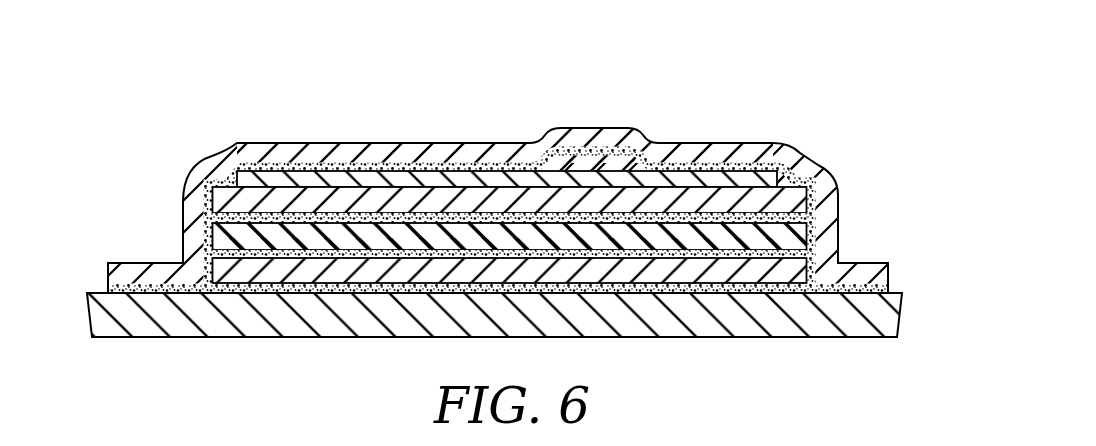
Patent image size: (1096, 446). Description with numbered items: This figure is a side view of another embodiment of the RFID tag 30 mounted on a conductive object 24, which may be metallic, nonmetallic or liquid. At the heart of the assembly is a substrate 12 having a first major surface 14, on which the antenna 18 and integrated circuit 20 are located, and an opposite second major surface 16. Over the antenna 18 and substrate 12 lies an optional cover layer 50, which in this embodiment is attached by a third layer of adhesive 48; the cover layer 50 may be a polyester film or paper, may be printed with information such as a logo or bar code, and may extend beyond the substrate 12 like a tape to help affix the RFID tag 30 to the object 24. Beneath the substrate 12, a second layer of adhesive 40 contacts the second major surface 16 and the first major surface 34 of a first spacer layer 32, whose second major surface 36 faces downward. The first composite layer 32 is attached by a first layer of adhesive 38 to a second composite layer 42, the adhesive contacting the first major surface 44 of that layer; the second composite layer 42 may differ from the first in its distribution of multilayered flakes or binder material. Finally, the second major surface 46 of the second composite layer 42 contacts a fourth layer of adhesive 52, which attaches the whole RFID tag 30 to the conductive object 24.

The substrate 12 is at (666, 198).
The first major surface 14 is at (782, 167).
The second major surface 16 is at (746, 216).
The antenna 18 is at (405, 180).
The integrated circuit 20 is at (597, 160).
The conductive object 24 is at (848, 338).
The RFID tag 30 is at (772, 92).
The first spacer layer 32 is at (788, 233).
The first major surface 34 is at (810, 197).
The second major surface 36 is at (758, 245).
The first layer of adhesive 38 is at (203, 238).
The second layer of adhesive 40 is at (187, 198).
The second composite layer 42 is at (674, 270).
The first major surface 44 is at (388, 253).
The second major surface 46 is at (311, 292).
The third layer of adhesive 48 is at (258, 163).
The cover layer 50 is at (316, 152).
The fourth layer of adhesive 52 is at (183, 284).